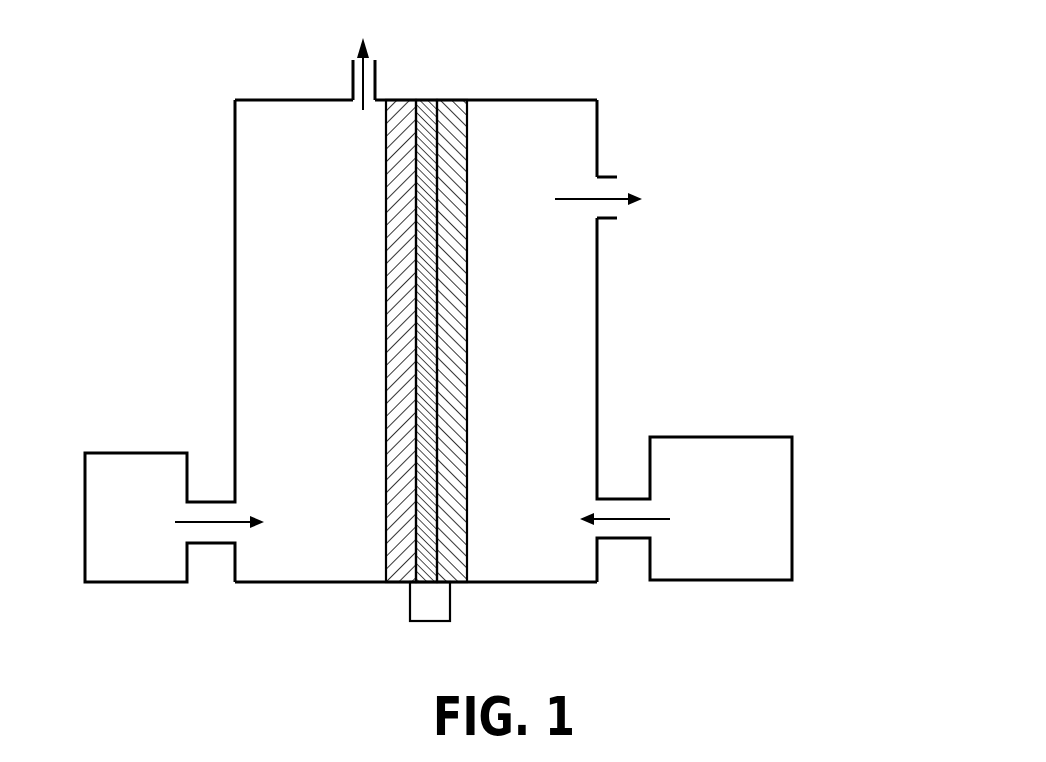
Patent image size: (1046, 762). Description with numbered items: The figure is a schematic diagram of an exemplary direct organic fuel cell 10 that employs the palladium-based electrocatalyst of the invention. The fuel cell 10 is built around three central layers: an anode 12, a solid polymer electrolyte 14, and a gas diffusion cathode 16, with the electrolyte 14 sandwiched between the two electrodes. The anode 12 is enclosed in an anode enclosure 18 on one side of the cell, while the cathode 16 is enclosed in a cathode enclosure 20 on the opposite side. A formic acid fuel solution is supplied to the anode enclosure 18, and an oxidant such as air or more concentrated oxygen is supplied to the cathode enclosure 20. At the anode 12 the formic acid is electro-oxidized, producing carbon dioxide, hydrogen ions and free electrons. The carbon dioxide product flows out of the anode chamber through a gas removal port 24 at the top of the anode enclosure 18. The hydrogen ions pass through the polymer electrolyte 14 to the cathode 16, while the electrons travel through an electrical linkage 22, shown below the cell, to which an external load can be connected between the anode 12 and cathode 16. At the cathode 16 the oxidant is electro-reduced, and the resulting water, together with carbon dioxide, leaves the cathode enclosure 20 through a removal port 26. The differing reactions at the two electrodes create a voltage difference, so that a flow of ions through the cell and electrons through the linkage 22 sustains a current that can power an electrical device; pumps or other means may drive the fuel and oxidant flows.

The direct organic fuel cell 10 is at (108, 203).
The anode 12 is at (393, 222).
The solid polymer electrolyte 14 is at (423, 282).
The gas diffusion cathode 16 is at (460, 335).
The anode enclosure 18 is at (235, 341).
The cathode enclosure 20 is at (598, 358).
The electrical linkage 22 is at (420, 621).
The gas removal port 24 is at (353, 92).
The removal port 26 is at (600, 177).